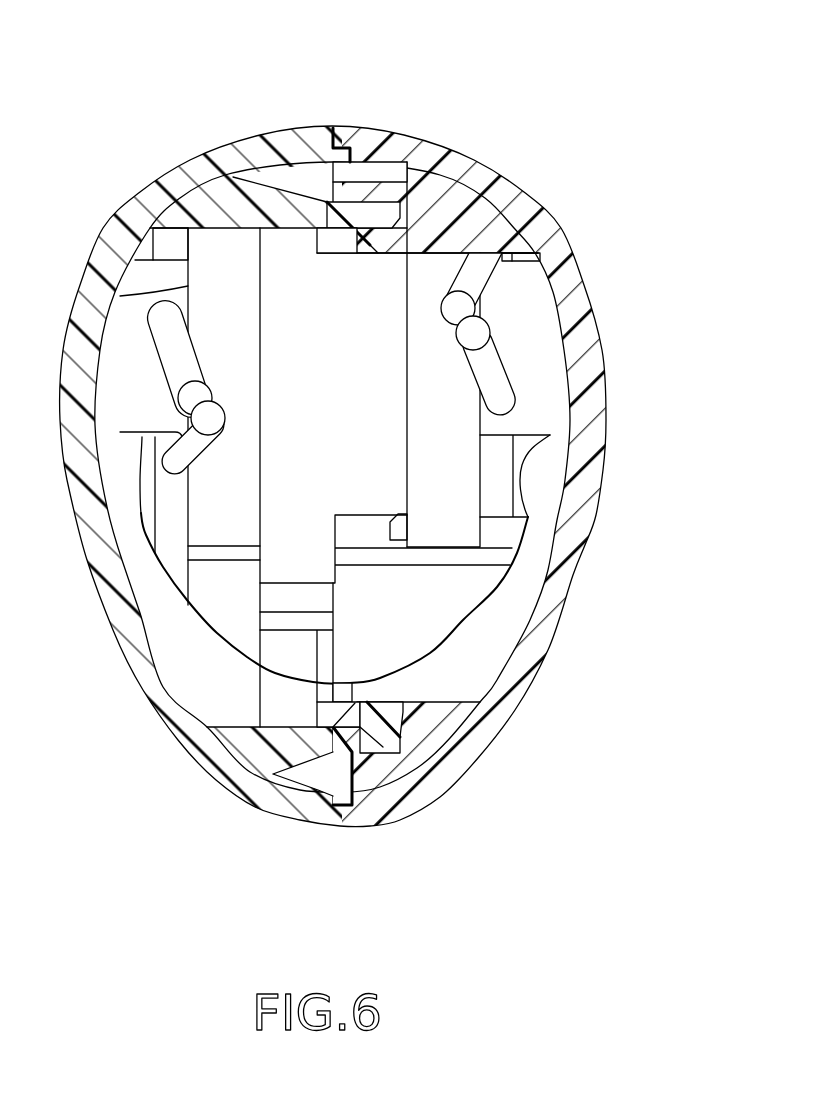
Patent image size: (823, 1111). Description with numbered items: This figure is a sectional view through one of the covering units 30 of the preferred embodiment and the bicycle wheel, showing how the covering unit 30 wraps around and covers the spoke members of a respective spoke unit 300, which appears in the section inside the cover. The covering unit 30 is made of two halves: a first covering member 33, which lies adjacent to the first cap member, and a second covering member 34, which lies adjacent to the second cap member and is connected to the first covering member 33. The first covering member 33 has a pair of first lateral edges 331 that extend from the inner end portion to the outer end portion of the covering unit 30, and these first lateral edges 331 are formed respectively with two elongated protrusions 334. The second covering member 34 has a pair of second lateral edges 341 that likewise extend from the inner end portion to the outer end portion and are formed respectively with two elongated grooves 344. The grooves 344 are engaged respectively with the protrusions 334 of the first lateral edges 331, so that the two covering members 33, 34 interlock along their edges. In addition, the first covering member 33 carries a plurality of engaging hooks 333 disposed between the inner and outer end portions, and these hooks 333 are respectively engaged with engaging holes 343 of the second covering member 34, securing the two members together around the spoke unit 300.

The covering unit 30 is at (573, 244).
The first covering member 33 is at (102, 270).
The second covering member 34 is at (590, 413).
The spoke unit 300 is at (517, 346).
The first lateral edges 331 is at (343, 154).
The engaging hooks 333 is at (401, 240).
The elongated protrusions 334 is at (347, 151).
The second lateral edges 341 is at (351, 146).
The engaging holes 343 is at (434, 213).
The elongated grooves 344 is at (376, 221).